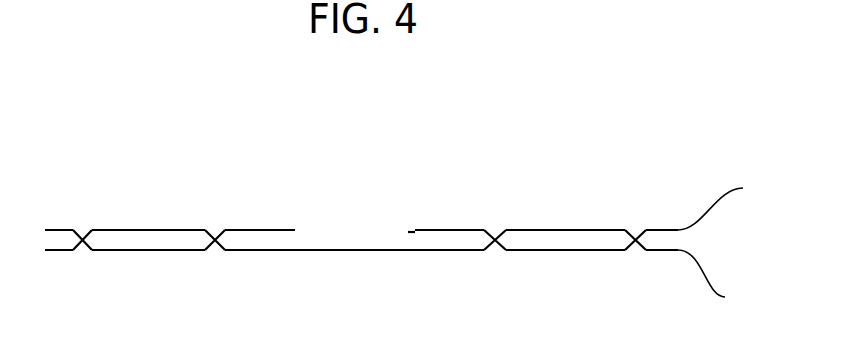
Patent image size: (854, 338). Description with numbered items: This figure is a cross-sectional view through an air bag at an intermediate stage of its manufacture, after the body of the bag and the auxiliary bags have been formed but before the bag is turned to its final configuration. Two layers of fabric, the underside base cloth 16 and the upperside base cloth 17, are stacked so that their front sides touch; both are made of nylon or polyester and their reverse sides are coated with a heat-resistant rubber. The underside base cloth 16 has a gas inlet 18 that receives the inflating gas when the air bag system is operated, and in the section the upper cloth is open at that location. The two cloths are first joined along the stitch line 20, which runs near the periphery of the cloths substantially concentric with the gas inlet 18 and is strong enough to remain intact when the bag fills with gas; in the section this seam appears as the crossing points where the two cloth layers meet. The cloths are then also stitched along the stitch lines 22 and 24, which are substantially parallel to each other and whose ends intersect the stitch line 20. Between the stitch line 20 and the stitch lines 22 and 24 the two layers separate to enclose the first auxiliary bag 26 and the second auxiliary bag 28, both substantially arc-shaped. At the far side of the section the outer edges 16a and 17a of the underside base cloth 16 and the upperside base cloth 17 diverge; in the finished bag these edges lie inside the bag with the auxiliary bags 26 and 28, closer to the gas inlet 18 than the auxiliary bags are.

The underside base cloth 16 is at (467, 231).
The upperside base cloth 17 is at (322, 252).
The gas inlet 18 is at (408, 232).
The stitch line 20 is at (83, 237).
The stitch line 22 is at (215, 237).
The stitch line 24 is at (497, 237).
The first auxiliary bag 26 is at (165, 237).
The second auxiliary bag 28 is at (588, 240).
The outer edge of the underside base cloth 16a is at (737, 205).
The outer edge of the upperside base cloth 17a is at (737, 280).